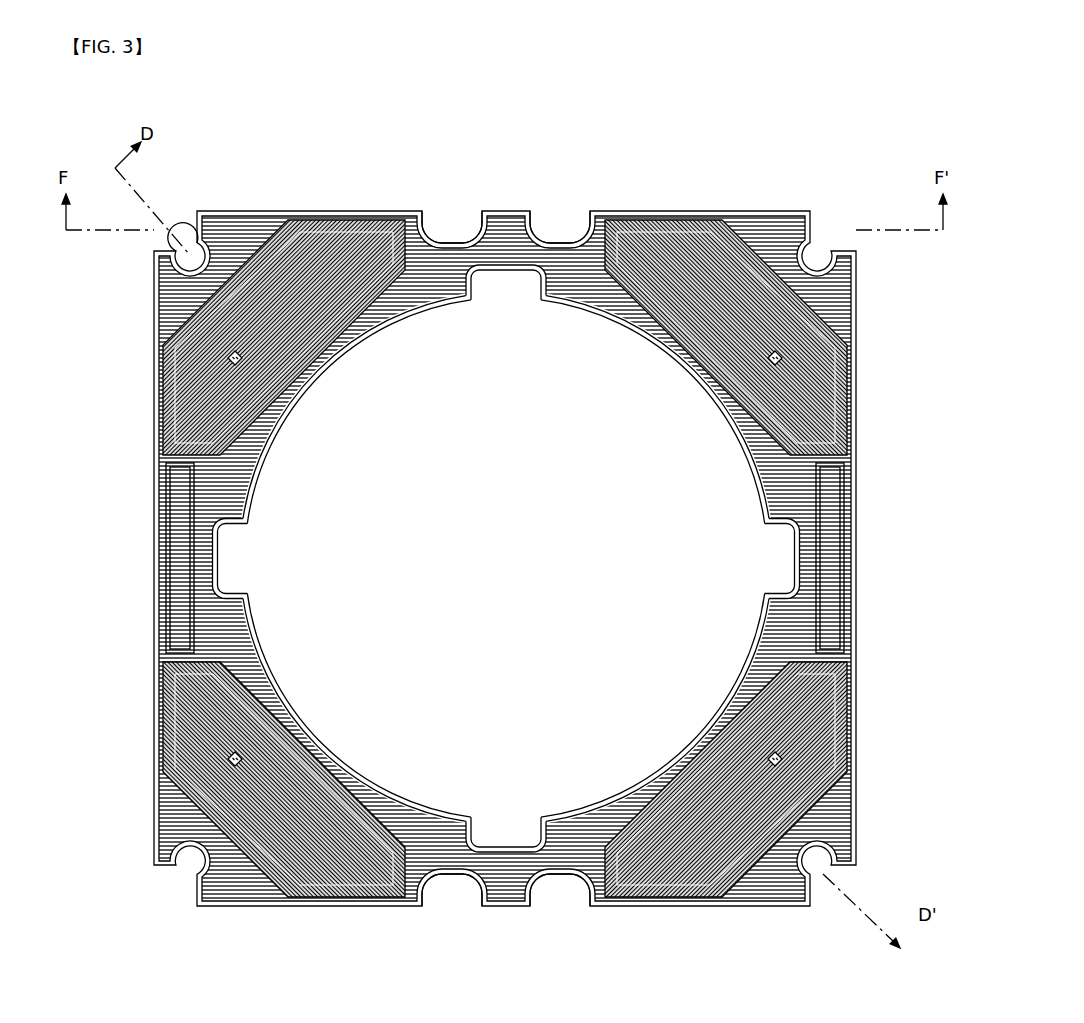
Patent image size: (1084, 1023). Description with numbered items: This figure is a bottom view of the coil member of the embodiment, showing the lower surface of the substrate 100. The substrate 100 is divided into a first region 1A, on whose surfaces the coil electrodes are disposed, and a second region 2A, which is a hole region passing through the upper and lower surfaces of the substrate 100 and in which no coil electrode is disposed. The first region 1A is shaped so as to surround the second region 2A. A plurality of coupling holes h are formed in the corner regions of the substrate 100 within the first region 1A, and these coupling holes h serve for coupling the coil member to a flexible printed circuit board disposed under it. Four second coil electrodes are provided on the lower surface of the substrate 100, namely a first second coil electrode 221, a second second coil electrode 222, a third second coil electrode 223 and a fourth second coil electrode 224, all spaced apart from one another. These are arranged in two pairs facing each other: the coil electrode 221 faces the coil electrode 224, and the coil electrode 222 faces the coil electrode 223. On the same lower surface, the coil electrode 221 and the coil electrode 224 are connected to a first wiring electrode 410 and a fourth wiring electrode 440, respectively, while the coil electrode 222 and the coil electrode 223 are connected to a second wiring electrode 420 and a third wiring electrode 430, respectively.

The substrate 100 is at (850, 570).
The 2-1 coil electrode 221 is at (330, 213).
The 2-2 coil electrode 222 is at (332, 890).
The 2-3 coil electrode 223 is at (655, 213).
The 2-4 coil electrode 224 is at (660, 890).
The first wiring electrode 410 is at (446, 210).
The second wiring electrode 420 is at (446, 890).
The third wiring electrode 430 is at (555, 210).
The fourth wiring electrode 440 is at (554, 890).
The first region 1A is at (156, 492).
The second region 2A is at (632, 527).
The coupling hole h is at (182, 209).